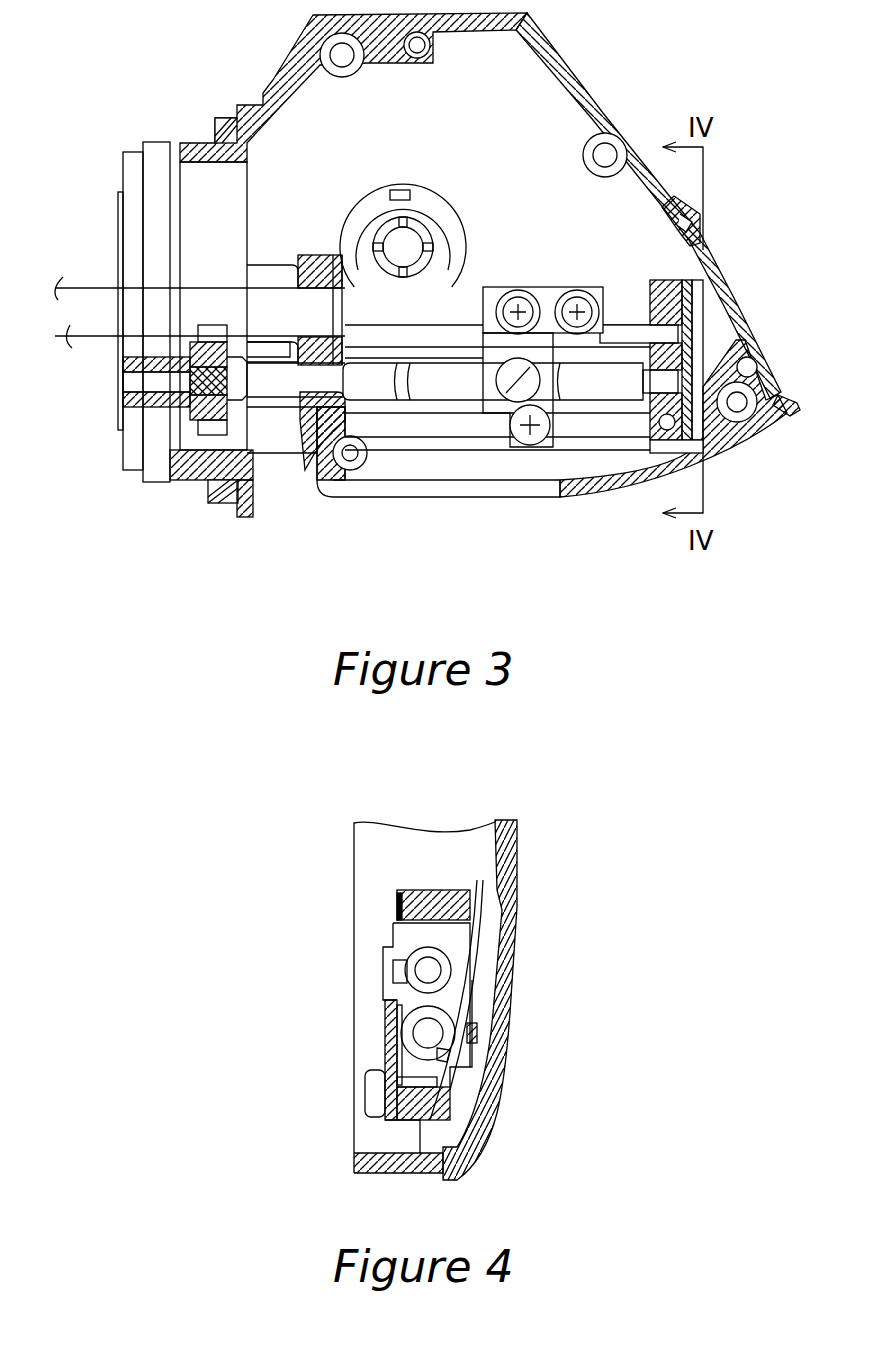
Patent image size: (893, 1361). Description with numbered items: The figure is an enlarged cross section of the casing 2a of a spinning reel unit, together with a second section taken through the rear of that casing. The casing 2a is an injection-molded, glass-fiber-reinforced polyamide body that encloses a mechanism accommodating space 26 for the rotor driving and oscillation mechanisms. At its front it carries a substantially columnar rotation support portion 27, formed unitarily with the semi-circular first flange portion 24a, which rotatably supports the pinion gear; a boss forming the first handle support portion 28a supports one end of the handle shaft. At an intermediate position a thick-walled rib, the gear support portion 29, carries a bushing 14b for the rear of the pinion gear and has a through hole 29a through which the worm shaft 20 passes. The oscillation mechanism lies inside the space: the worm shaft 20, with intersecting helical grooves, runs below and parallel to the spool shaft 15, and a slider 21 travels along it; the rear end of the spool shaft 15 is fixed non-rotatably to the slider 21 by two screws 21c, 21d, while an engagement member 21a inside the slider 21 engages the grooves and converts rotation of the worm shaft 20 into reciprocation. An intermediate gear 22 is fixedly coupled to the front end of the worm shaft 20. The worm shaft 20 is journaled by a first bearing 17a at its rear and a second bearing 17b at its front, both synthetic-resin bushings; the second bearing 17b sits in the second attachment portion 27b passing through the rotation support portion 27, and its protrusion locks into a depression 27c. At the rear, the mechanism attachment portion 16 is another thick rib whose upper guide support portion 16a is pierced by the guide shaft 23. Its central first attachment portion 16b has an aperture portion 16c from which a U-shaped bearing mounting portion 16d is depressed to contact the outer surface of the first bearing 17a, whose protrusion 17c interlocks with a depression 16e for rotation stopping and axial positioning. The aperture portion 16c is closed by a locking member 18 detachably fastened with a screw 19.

In FIG. 3, the casing 2a is at (553, 100).
In FIG. 4, the casing 2a is at (510, 838).
In FIG. 3, the bushing 14b is at (343, 277).
In FIG. 3, the spool shaft 15 is at (76, 322).
In FIG. 4, the mechanism attachment portion 16 is at (462, 950).
In FIG. 4, the guide support portion 16a is at (460, 945).
In FIG. 4, the first attachment portion 16b is at (457, 993).
In FIG. 4, the aperture portion 16c is at (387, 1013).
In FIG. 4, the bearing mounting portion 16d is at (450, 1050).
In FIG. 4, the depression 16e is at (480, 1030).
In FIG. 3, the first bearing 17a is at (660, 400).
In FIG. 4, the first bearing 17a is at (417, 1050).
In FIG. 3, the second bearing 17b is at (122, 402).
In FIG. 4, the protrusion 17c is at (457, 1057).
In FIG. 4, the locking member 18 is at (387, 1050).
In FIG. 4, the screw 19 is at (373, 1100).
In FIG. 3, the worm shaft 20 is at (603, 373).
In FIG. 3, the slider 21 is at (548, 290).
In FIG. 3, the engagement member 21a is at (523, 440).
In FIG. 3, the screw 21c is at (518, 290).
In FIG. 3, the screw 21d is at (580, 290).
In FIG. 3, the intermediate gear 22 is at (207, 427).
In FIG. 3, the guide shaft 23 is at (630, 342).
In FIG. 3, the first flange portion 24a is at (243, 517).
In FIG. 3, the mechanism accommodating space 26 is at (662, 295).
In FIG. 3, the rotation support portion 27 is at (187, 147).
In FIG. 3, the second attachment portion 27b is at (152, 420).
In FIG. 3, the depression 27c is at (140, 360).
In FIG. 3, the first handle support portion 28a is at (460, 205).
In FIG. 3, the gear support portion 29 is at (317, 267).
In FIG. 3, the through hole 29a is at (303, 467).